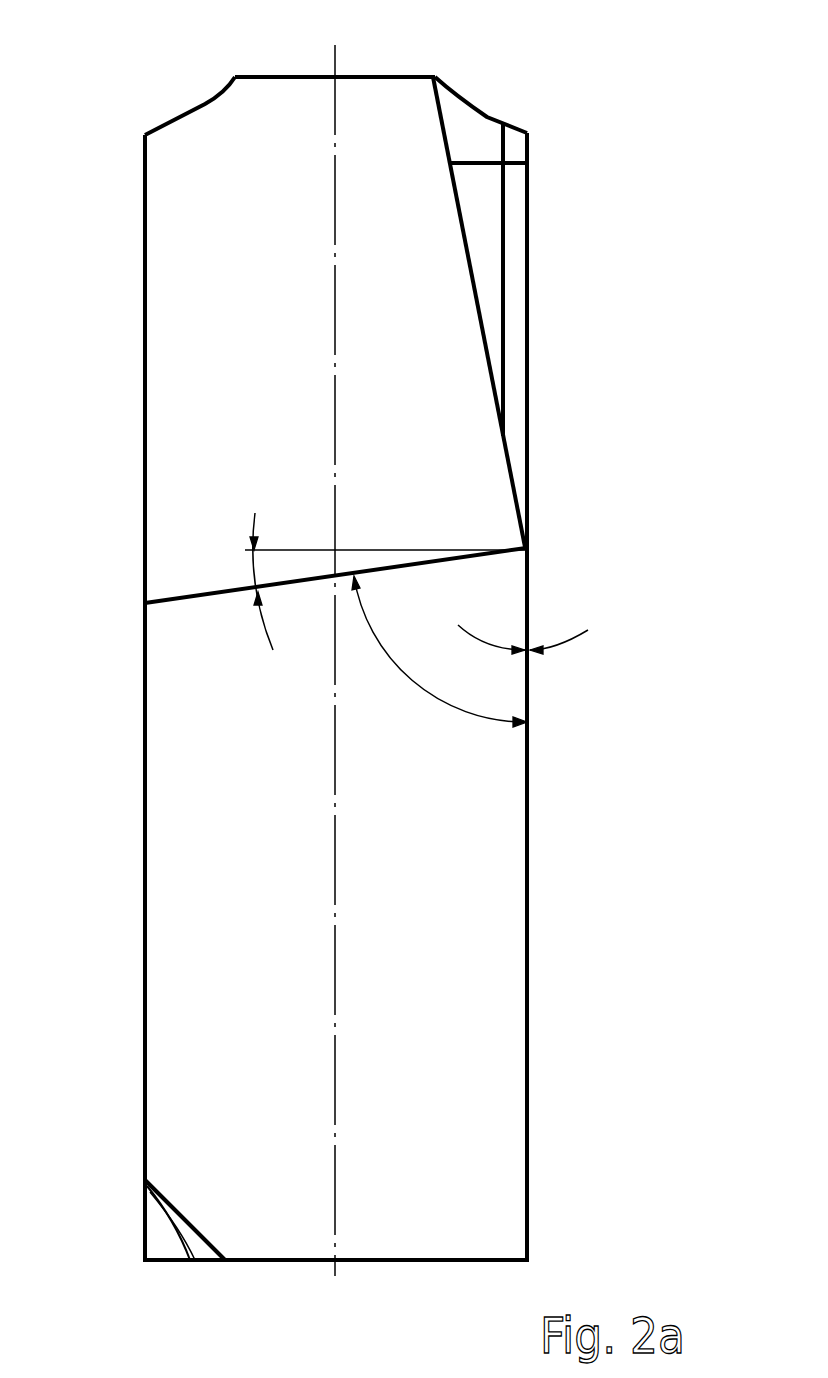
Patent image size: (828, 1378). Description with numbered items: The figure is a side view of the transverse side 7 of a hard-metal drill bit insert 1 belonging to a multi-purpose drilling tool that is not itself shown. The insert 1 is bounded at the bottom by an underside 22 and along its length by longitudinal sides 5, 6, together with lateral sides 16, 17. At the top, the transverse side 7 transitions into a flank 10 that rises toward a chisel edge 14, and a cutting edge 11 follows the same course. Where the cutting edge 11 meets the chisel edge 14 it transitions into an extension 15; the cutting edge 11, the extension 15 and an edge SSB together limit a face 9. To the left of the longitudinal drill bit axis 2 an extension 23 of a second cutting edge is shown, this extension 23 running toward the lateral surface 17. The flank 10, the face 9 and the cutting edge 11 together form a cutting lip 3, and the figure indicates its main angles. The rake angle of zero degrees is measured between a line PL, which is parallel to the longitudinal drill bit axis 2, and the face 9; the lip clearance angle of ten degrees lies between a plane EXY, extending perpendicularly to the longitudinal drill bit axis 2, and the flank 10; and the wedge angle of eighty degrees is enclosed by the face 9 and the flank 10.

The hard-metal drill bit insert 1 is at (520, 86).
The longitudinal drill bit axis 2 is at (336, 60).
The cutting lip 3 is at (208, 268).
The longitudinal side 5 is at (530, 952).
The longitudinal side 6 is at (143, 774).
The transverse side 7 is at (482, 785).
The face 9 is at (482, 333).
The flank 10 is at (175, 370).
The cutting edge 11 is at (470, 267).
The chisel edge 14 is at (292, 75).
The extension 15 is at (483, 108).
The lateral side 16 is at (530, 882).
The lateral side 17 is at (143, 890).
The underside 22 is at (377, 1262).
The extension of second cutting edge 23 is at (180, 117).
The edge SSB is at (528, 322).
The plane EXY is at (383, 547).
The line parallel to longitudinal drill bit axis PL is at (530, 820).